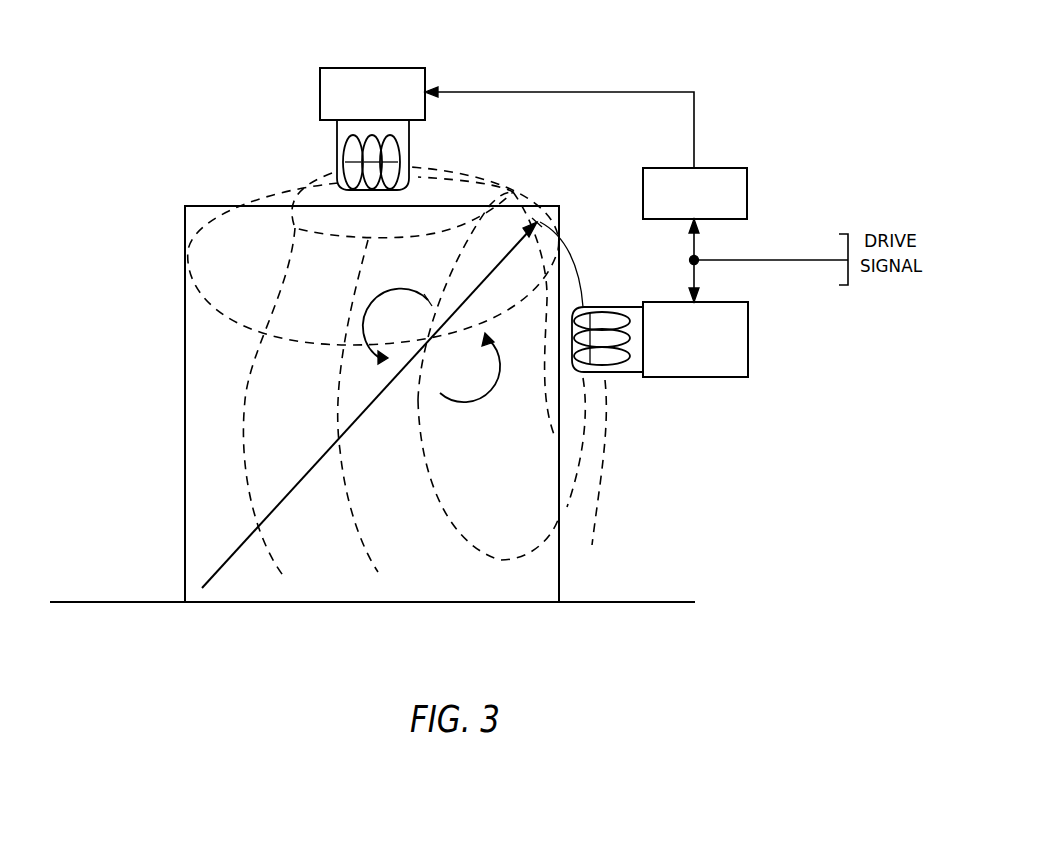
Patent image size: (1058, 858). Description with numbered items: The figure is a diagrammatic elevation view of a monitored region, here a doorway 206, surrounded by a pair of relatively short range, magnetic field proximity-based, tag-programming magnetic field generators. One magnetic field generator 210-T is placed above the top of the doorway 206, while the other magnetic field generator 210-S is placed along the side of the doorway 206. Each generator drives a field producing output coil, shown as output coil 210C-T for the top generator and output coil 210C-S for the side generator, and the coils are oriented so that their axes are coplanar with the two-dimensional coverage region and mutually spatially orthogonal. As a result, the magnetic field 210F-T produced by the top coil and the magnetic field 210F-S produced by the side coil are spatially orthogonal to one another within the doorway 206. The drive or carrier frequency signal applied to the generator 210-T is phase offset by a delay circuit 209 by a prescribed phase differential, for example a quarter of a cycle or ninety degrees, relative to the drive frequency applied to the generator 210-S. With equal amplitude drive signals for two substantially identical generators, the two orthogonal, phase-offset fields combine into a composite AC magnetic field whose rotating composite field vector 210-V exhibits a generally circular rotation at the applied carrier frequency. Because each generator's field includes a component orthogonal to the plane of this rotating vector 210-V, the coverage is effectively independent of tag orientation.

The doorway 206 is at (185, 419).
The delay circuit 209 is at (748, 182).
The magnetic field generator 210-T is at (410, 68).
The field producing output coil 210C-T is at (340, 157).
The magnetic field 210F-T is at (292, 216).
The rotating composite field vector 210-V is at (270, 512).
The magnetic field generator 210-S is at (748, 320).
The field producing output coil 210C-S is at (595, 372).
The magnetic field 210F-S is at (477, 553).